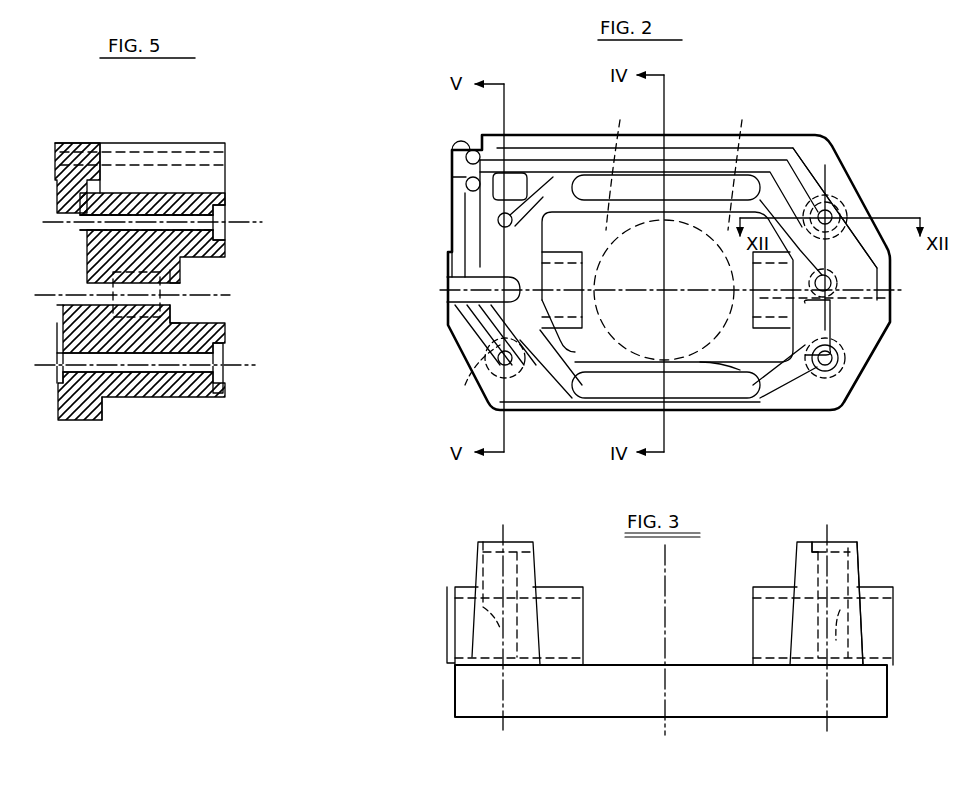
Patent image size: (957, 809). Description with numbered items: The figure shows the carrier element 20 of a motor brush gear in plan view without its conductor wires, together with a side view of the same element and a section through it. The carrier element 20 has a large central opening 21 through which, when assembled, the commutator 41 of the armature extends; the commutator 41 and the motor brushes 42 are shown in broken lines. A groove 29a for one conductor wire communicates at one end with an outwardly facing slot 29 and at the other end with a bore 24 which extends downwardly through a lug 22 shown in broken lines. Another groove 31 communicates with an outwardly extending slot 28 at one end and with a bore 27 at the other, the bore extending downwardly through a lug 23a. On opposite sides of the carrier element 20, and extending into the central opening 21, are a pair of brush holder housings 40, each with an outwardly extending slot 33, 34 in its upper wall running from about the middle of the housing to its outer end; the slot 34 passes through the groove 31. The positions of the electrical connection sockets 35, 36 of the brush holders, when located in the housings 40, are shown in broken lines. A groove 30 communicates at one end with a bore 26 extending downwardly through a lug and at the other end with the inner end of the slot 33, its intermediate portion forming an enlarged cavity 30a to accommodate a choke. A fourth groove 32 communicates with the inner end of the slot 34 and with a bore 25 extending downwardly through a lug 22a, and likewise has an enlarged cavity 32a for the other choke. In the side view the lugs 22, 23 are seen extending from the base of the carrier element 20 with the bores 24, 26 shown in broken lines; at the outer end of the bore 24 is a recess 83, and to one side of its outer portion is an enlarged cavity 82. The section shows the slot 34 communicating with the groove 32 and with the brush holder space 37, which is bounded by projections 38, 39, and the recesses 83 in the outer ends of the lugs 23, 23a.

In FIG. 2, the carrier element 20 is at (862, 409).
In FIG. 3, the carrier element 20 is at (648, 656).
In FIG. 2, the central opening 21 is at (713, 355).
In FIG. 2, the lug 22 is at (878, 222).
In FIG. 3, the lug 22 is at (800, 560).
In FIG. 2, the lug 22a is at (858, 390).
In FIG. 5, the lug 23 is at (208, 193).
In FIG. 2, the lug 23 is at (667, 287).
In FIG. 3, the lug 23 is at (522, 553).
In FIG. 5, the lug 23a is at (195, 397).
In FIG. 2, the lug 23a is at (478, 400).
In FIG. 2, the bore 24 is at (830, 212).
In FIG. 3, the bore 24 is at (790, 632).
In FIG. 2, the bore 25 is at (830, 355).
In FIG. 5, the bore 26 is at (180, 215).
In FIG. 2, the bore 26 is at (508, 214).
In FIG. 3, the bore 26 is at (520, 650).
In FIG. 5, the bore 27 is at (165, 368).
In FIG. 2, the bore 27 is at (498, 358).
In FIG. 2, the slot 28 is at (466, 184).
In FIG. 5, the slot 29 is at (172, 150).
In FIG. 2, the slot 29 is at (468, 153).
In FIG. 5, the groove 29a is at (63, 150).
In FIG. 2, the groove 29a is at (724, 150).
In FIG. 2, the groove 30 is at (548, 186).
In FIG. 2, the enlarged cavity 30a is at (683, 185).
In FIG. 5, the groove 31 is at (63, 355).
In FIG. 2, the groove 31 is at (462, 213).
In FIG. 5, the groove 32 is at (62, 322).
In FIG. 2, the groove 32 is at (548, 385).
In FIG. 2, the enlarged cavity 32a is at (595, 400).
In FIG. 2, the slot 33 is at (890, 272).
In FIG. 5, the slot 34 is at (100, 300).
In FIG. 2, the slot 34 is at (455, 281).
In FIG. 2, the electrical connection socket 35 is at (850, 298).
In FIG. 2, the electrical connection socket 36 is at (447, 300).
In FIG. 5, the brush holder space 37 is at (143, 300).
In FIG. 5, the projection 38 is at (180, 322).
In FIG. 5, the projection 39 is at (180, 276).
In FIG. 2, the brush holder housing 40 is at (562, 398).
In FIG. 2, the commutator 41 is at (658, 290).
In FIG. 2, the motor brushes 42 is at (683, 164).
In FIG. 3, the enlarged cavity 82 is at (860, 552).
In FIG. 5, the recess 83 is at (222, 218).
In FIG. 3, the recess 83 is at (813, 545).